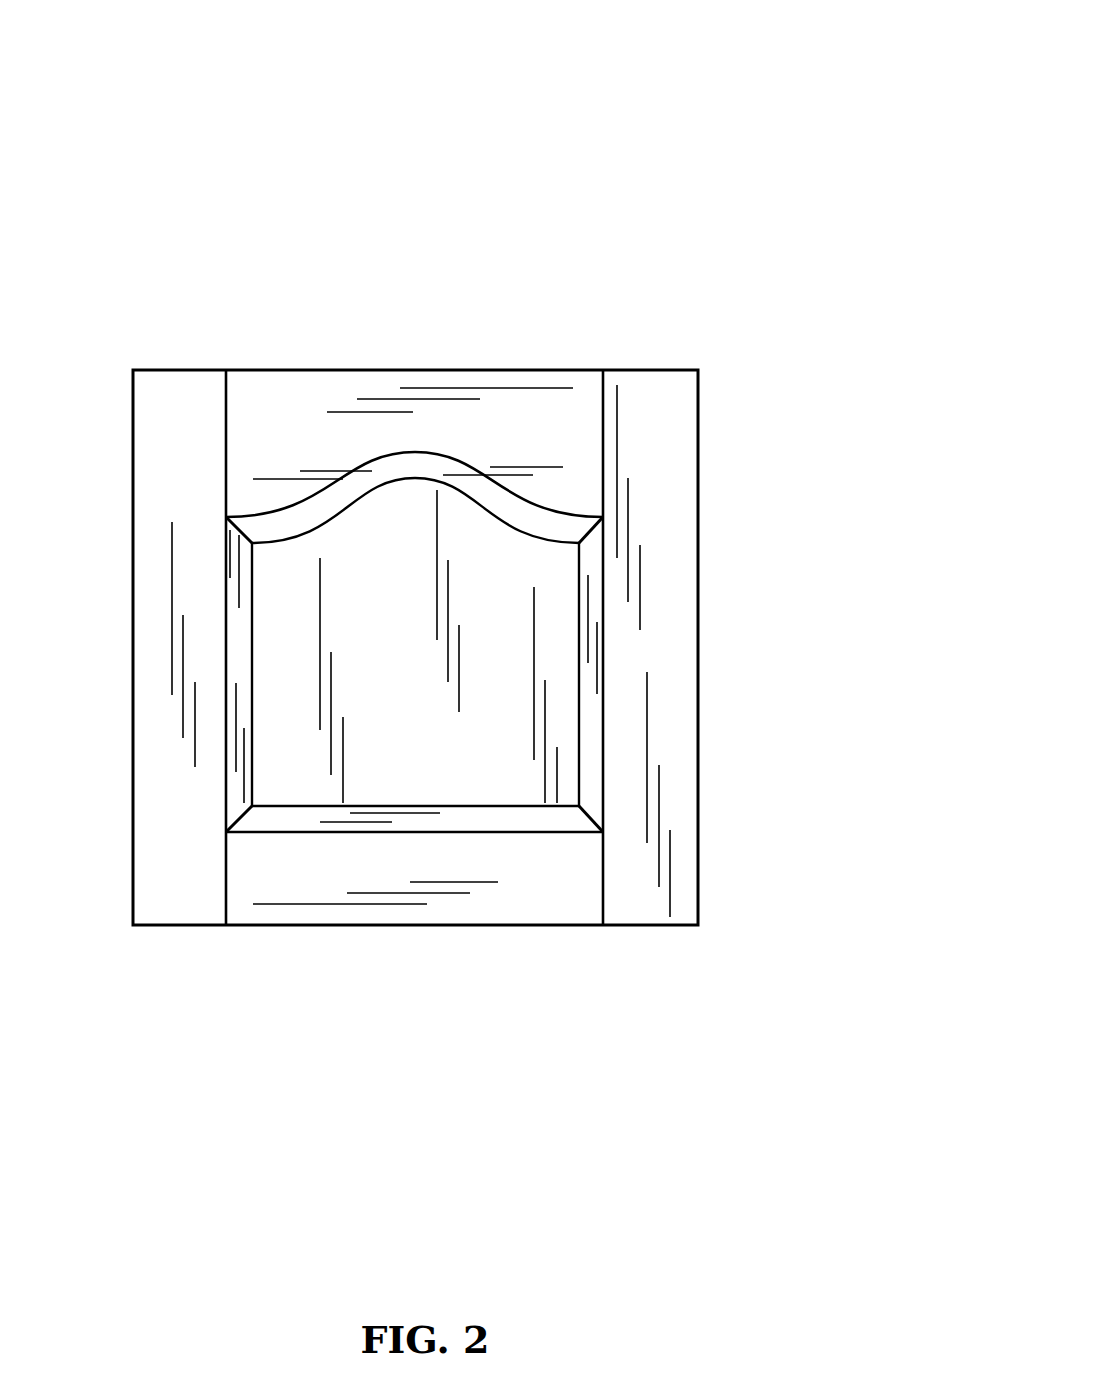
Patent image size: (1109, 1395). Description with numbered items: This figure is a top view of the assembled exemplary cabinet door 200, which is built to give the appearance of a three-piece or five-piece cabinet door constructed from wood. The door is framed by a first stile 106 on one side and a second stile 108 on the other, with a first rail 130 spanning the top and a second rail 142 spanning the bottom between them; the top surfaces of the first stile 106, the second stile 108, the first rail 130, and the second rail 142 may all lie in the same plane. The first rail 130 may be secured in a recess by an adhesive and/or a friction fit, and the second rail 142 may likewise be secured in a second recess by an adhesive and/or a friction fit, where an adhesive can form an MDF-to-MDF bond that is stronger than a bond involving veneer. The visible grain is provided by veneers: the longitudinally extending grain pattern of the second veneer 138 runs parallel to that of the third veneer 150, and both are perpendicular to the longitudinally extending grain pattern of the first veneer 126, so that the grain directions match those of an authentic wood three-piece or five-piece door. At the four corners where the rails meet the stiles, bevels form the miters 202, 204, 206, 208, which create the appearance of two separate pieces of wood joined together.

The cabinet door 200 is at (822, 69).
The first stile 106 is at (167, 497).
The second stile 108 is at (675, 573).
The first veneer 126 is at (172, 608).
The first rail 130 is at (315, 393).
The second veneer 138 is at (537, 388).
The third veneer 150 is at (327, 903).
The second rail 142 is at (540, 895).
The miter 202 is at (252, 543).
The miter 204 is at (228, 832).
The miter 206 is at (585, 528).
The miter 208 is at (586, 827).